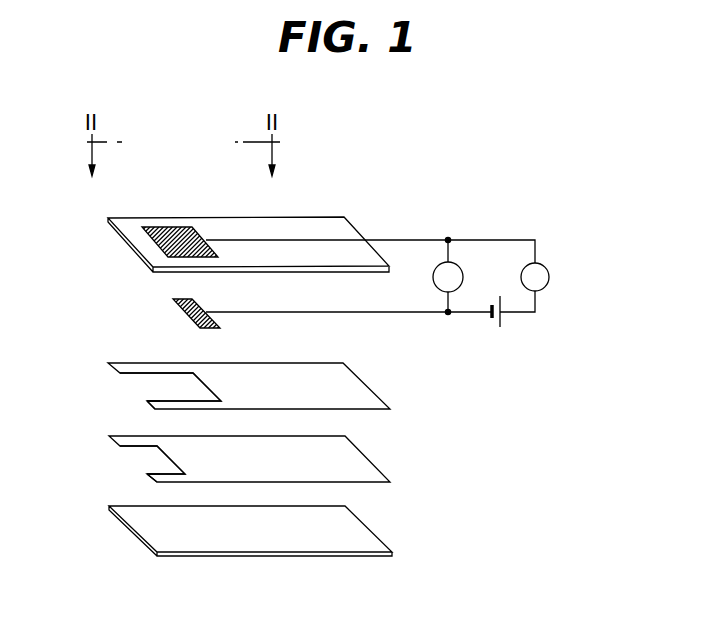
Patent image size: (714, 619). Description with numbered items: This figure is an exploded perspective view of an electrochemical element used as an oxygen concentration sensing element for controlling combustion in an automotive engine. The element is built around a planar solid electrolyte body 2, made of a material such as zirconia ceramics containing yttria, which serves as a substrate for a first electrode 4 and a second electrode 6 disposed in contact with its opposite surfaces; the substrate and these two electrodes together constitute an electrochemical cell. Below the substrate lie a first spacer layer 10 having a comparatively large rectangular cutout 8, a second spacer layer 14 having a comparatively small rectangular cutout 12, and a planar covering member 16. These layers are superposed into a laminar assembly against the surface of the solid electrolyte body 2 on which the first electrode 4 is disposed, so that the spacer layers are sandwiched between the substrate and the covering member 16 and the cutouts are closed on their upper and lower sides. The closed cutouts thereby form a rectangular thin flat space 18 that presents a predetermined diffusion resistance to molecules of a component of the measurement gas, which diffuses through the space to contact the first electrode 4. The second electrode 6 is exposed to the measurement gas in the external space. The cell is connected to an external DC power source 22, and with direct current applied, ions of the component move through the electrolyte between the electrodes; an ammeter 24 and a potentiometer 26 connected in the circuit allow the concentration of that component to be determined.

The planar solid electrolyte body 2 is at (138, 240).
The first electrode 4 is at (180, 311).
The second electrode 6 is at (168, 232).
The comparatively large rectangular cutout 8 is at (161, 396).
The first spacer layer 10 is at (350, 376).
The comparatively small rectangular cutout 12 is at (158, 470).
The second spacer layer 14 is at (357, 458).
The planar covering member 16 is at (355, 529).
The rectangular thin flat space 18 is at (163, 382).
The external DC power source 22 is at (490, 336).
The ammeter 24 is at (546, 265).
The potentiometer 26 is at (461, 271).